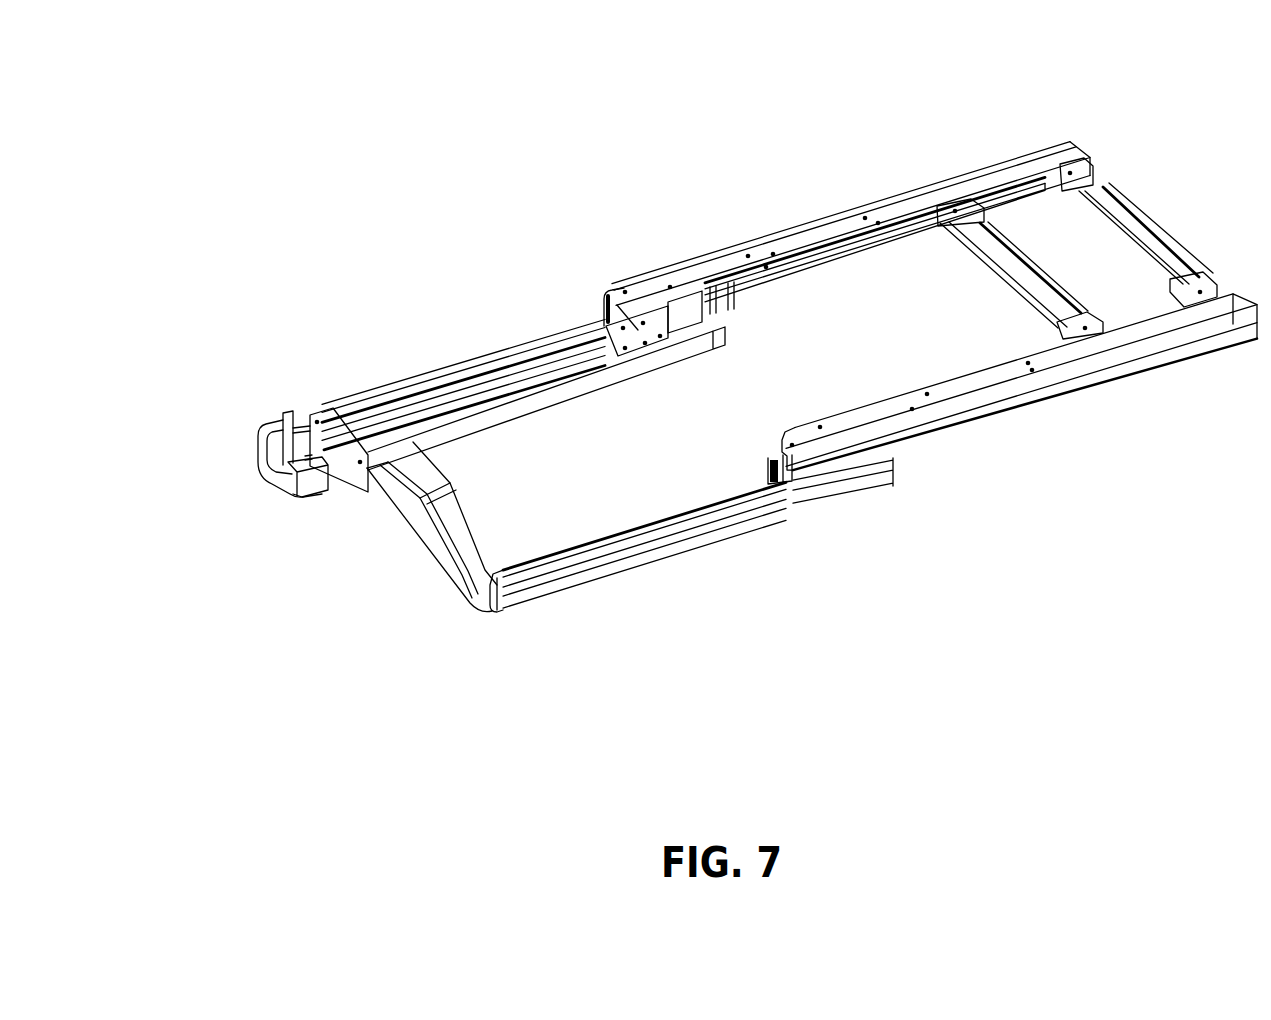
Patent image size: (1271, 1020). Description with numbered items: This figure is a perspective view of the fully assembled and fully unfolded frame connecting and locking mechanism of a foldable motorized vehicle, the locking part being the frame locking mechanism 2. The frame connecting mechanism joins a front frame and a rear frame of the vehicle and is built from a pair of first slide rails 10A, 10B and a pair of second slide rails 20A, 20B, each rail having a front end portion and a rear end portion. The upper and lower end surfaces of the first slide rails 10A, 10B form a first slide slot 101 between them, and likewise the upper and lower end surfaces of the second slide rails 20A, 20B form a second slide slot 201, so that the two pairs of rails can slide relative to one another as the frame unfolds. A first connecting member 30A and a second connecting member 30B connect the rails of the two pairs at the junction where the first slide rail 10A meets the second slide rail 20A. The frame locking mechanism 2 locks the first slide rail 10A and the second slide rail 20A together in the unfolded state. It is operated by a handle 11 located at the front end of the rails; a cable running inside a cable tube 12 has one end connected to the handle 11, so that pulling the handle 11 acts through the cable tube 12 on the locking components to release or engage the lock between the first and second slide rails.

The frame locking mechanism 2 is at (735, 283).
The first slide rail 10A is at (358, 400).
The first slide rail 10B is at (663, 548).
The handle 11 is at (280, 477).
The cable tube 12 is at (403, 528).
The second slide rail 20A is at (1004, 165).
The second slide rail 20B is at (1102, 370).
The first connecting member 30A is at (680, 303).
The second connecting member 30B is at (604, 293).
The first slide slot 101 is at (465, 398).
The second slide slot 201 is at (857, 237).